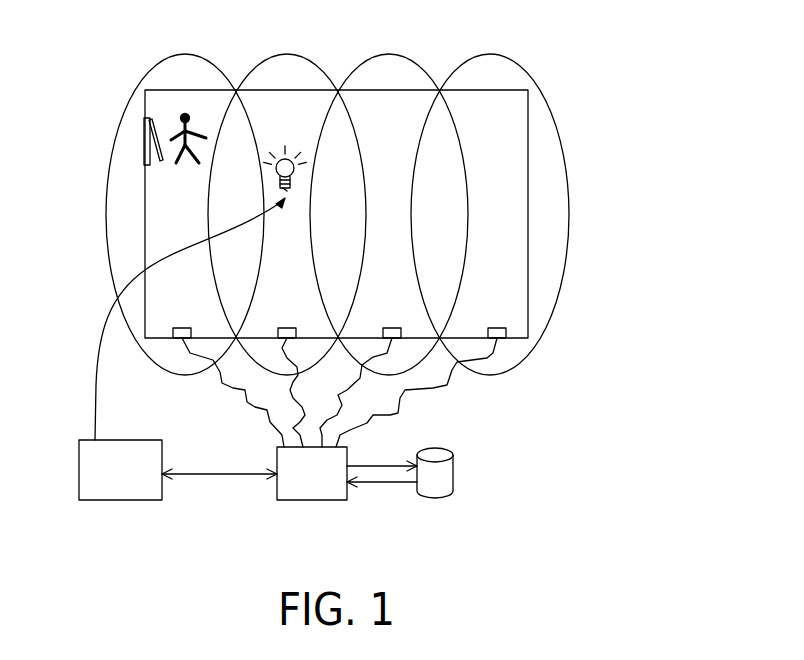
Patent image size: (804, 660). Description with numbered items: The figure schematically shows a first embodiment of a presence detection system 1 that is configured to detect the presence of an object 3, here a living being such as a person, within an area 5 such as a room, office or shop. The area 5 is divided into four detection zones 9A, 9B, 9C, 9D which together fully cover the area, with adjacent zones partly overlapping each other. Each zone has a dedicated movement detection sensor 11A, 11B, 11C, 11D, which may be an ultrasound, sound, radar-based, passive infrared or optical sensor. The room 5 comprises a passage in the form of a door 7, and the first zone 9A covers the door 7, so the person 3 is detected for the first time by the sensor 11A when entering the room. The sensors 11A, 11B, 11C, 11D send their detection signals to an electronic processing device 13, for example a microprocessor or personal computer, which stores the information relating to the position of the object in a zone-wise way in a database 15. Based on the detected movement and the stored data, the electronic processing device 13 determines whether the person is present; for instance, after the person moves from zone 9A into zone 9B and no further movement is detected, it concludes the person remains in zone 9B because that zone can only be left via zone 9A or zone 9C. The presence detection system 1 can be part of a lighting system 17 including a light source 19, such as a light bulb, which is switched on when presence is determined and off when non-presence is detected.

The presence detection system 1 is at (606, 155).
The object 3 is at (178, 122).
The area 5 is at (163, 198).
The door 7 is at (145, 148).
The detection zone 9A is at (203, 273).
The detection zone 9B is at (300, 273).
The detection zone 9C is at (406, 273).
The detection zone 9D is at (510, 273).
The sensor 11A is at (178, 328).
The sensor 11B is at (283, 328).
The sensor 11C is at (388, 328).
The sensor 11D is at (493, 328).
The electronic processing device 13 is at (310, 500).
The database 15 is at (435, 498).
The lighting system 17 is at (118, 500).
The light source 19 is at (292, 183).